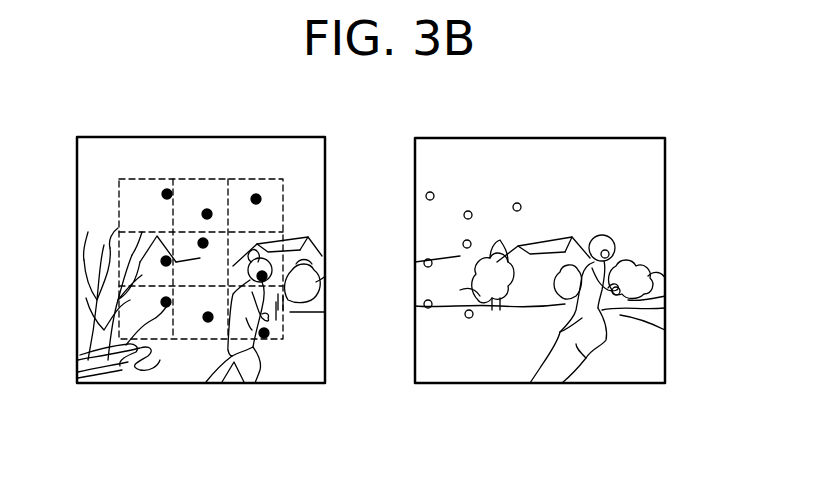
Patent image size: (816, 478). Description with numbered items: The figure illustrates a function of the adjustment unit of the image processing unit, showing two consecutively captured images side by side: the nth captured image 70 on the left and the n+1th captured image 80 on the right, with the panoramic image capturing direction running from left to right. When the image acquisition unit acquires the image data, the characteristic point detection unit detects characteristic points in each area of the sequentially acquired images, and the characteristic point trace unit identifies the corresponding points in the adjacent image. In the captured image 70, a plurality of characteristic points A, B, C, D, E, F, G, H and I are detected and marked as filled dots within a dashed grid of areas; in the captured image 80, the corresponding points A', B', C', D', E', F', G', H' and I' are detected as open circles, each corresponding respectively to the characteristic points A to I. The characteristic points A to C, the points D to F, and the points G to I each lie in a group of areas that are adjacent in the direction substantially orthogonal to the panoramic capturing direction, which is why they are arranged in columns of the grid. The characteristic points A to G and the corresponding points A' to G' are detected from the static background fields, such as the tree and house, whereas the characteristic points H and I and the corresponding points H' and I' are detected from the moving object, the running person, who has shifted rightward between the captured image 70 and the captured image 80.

The captured image 70 is at (310, 137).
The captured image 80 is at (632, 138).
The characteristic point A is at (153, 142).
The characteristic point B is at (103, 252).
The characteristic point C is at (103, 313).
The characteristic point D is at (205, 154).
The characteristic point E is at (122, 209).
The characteristic point F is at (204, 375).
The characteristic point G is at (257, 141).
The characteristic point H is at (306, 260).
The characteristic point I is at (304, 329).
The corresponding point A' is at (403, 162).
The corresponding point B' is at (396, 244).
The corresponding point C' is at (395, 303).
The corresponding point D' is at (464, 154).
The corresponding point E' is at (412, 213).
The corresponding point F' is at (459, 372).
The corresponding point G' is at (521, 144).
The corresponding point H' is at (672, 237).
The corresponding point I' is at (673, 281).